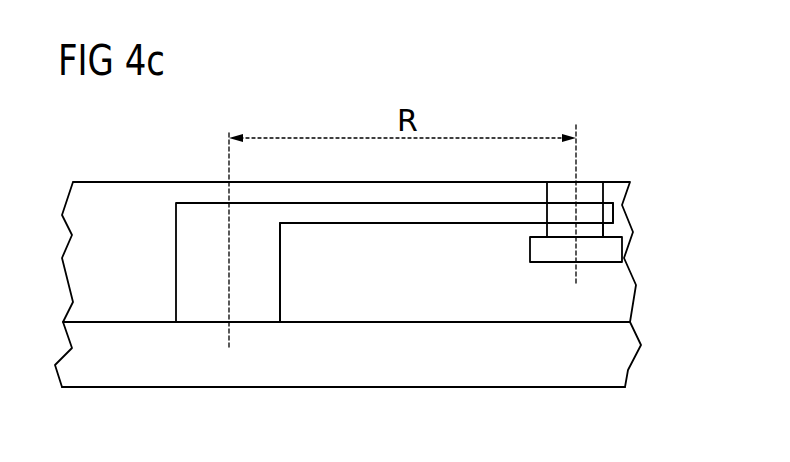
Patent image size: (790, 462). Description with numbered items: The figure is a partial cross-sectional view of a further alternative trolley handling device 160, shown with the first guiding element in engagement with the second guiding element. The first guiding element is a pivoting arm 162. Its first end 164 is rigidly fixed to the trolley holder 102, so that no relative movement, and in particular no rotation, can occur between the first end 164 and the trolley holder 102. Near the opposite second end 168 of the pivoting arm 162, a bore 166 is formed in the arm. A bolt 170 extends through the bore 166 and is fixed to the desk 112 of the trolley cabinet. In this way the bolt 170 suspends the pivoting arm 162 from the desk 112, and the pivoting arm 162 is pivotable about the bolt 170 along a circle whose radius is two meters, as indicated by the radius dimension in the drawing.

The trolley handling device 160 is at (527, 97).
The trolley holder 102 is at (350, 379).
The desk of the trolley cabinet 112 is at (615, 181).
The pivoting arm 162 is at (203, 218).
The first end 164 is at (210, 320).
The bore 166 is at (605, 218).
The second end 168 is at (610, 222).
The bolt 170 is at (590, 262).